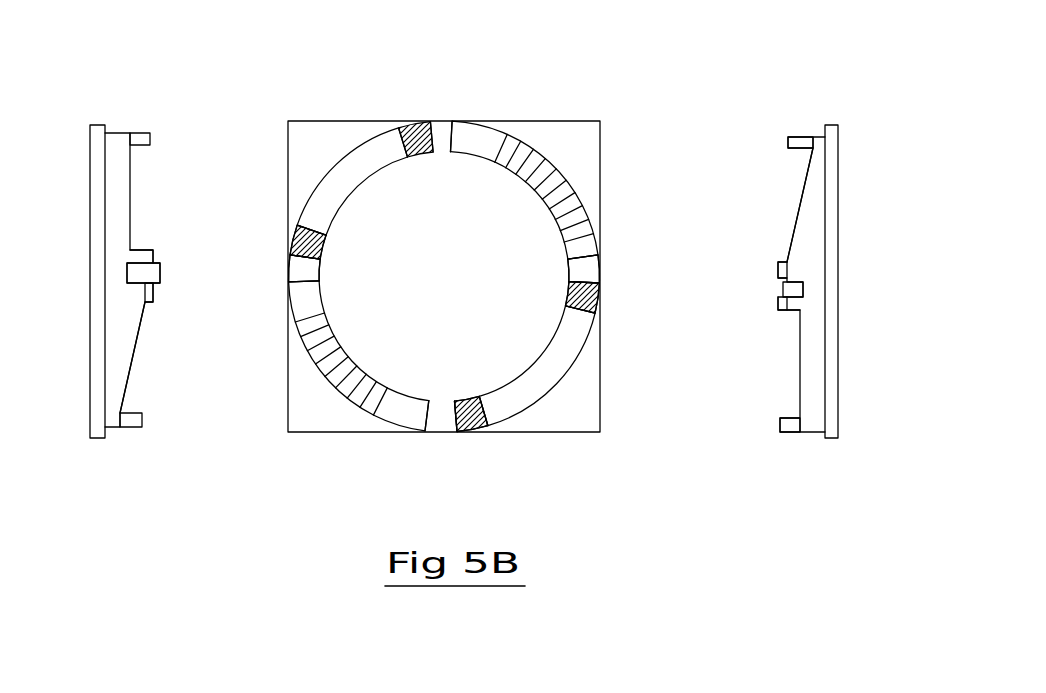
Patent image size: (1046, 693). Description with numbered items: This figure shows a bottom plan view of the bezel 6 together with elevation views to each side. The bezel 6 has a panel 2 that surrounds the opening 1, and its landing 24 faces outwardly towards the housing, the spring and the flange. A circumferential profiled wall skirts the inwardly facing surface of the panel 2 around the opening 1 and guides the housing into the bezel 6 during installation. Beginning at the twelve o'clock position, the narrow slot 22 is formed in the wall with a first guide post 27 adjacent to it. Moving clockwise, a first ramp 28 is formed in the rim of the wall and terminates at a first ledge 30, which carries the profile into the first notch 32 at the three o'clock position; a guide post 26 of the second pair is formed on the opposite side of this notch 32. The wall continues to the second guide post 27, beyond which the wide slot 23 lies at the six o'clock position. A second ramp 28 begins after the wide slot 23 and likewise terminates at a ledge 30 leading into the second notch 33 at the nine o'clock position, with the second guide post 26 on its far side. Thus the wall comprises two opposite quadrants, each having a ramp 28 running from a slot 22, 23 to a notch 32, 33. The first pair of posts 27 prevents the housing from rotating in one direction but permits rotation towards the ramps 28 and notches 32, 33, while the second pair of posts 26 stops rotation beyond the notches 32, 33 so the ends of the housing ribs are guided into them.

The opening 1 is at (548, 258).
The panel 2 is at (97, 124).
The bezel 6 is at (463, 264).
The narrow slot 22 is at (447, 133).
The wide slot 23 is at (447, 427).
The landing 24 is at (91, 238).
The second pair of guide posts 26 is at (155, 254).
The first pair of guide posts 27 is at (143, 134).
The ramp 28 is at (130, 383).
The ledge 30 is at (150, 286).
The first notch 32 is at (583, 271).
The second notch 33 is at (143, 273).